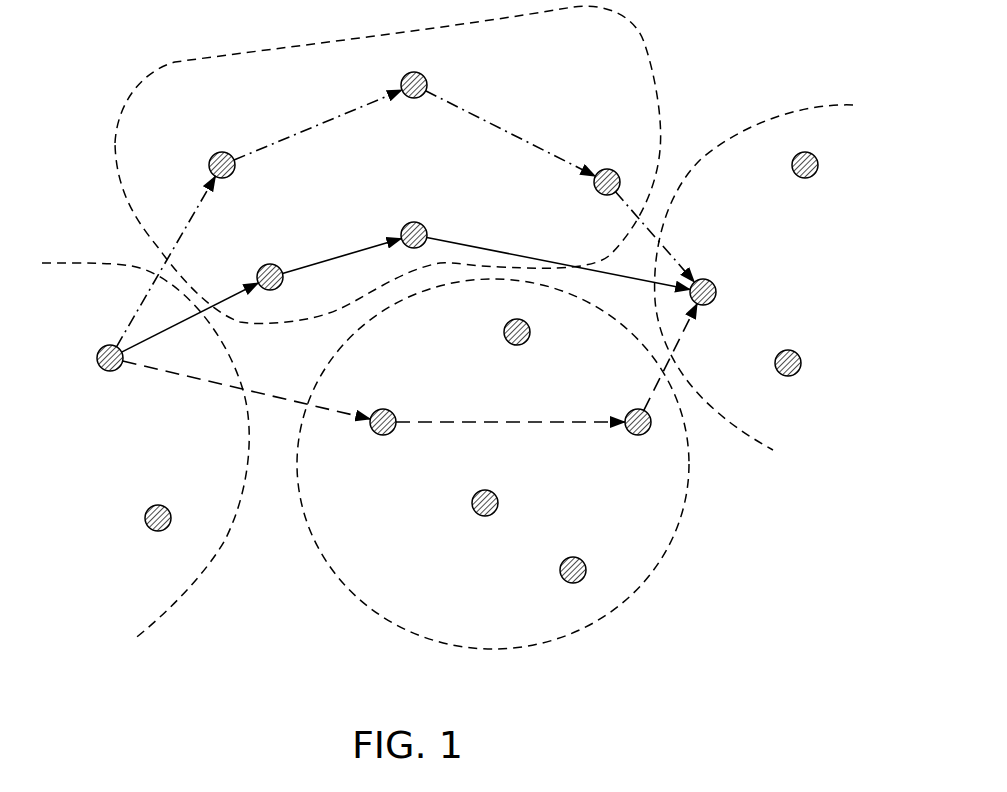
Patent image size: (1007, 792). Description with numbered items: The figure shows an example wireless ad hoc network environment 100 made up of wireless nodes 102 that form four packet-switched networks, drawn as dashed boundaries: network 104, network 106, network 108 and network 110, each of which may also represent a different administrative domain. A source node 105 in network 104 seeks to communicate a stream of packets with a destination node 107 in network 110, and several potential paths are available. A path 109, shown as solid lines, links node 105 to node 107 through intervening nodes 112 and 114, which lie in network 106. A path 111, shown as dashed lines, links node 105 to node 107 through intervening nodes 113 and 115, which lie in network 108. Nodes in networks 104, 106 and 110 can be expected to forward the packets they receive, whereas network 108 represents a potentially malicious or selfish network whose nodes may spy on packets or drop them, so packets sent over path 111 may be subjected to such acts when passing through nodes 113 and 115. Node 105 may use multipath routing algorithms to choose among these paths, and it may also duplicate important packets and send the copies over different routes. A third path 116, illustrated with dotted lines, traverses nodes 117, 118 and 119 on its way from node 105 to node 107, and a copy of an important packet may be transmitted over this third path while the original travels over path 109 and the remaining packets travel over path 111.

The wireless ad hoc network environment 100 is at (675, 688).
The wireless nodes 102 is at (270, 540).
The network 104 is at (73, 463).
The source node 105 is at (97, 350).
The network 106 is at (350, 171).
The destination node 107 is at (714, 301).
The network 108 is at (588, 501).
The path 109 is at (500, 254).
The network 110 is at (793, 248).
The path 111 is at (516, 420).
The intervening node 112 is at (270, 264).
The intervening node 113 is at (383, 434).
The intervening node 114 is at (410, 223).
The intervening node 115 is at (637, 410).
The third path 116 is at (502, 131).
The node 117 is at (210, 160).
The node 118 is at (407, 73).
The node 119 is at (600, 168).